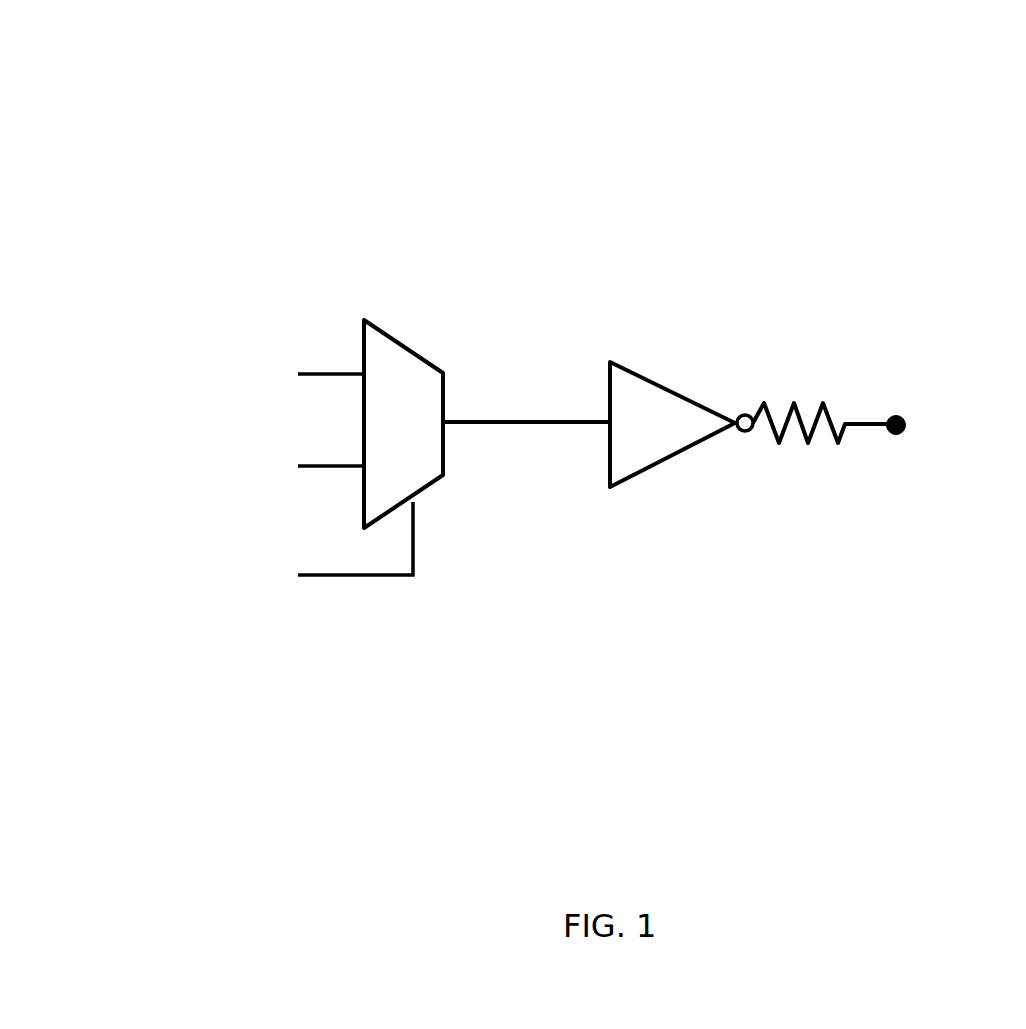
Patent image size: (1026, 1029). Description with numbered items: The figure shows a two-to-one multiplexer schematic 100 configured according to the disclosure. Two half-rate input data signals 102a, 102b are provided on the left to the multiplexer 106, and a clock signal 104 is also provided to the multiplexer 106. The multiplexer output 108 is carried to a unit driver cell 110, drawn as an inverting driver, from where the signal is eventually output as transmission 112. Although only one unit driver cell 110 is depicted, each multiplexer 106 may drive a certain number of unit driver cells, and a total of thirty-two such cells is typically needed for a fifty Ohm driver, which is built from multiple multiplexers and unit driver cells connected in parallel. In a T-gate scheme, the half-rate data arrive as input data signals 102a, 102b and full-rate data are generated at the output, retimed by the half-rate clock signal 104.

The 2:1 multiplexer schematic 100 is at (82, 46).
The input data signal 102a is at (288, 375).
The input data signal 102b is at (288, 467).
The clock signal 104 is at (320, 546).
The multiplexer 106 is at (423, 437).
The multiplexer output 108 is at (526, 405).
The unit driver cell 110 is at (681, 447).
The transmission 112 is at (873, 423).